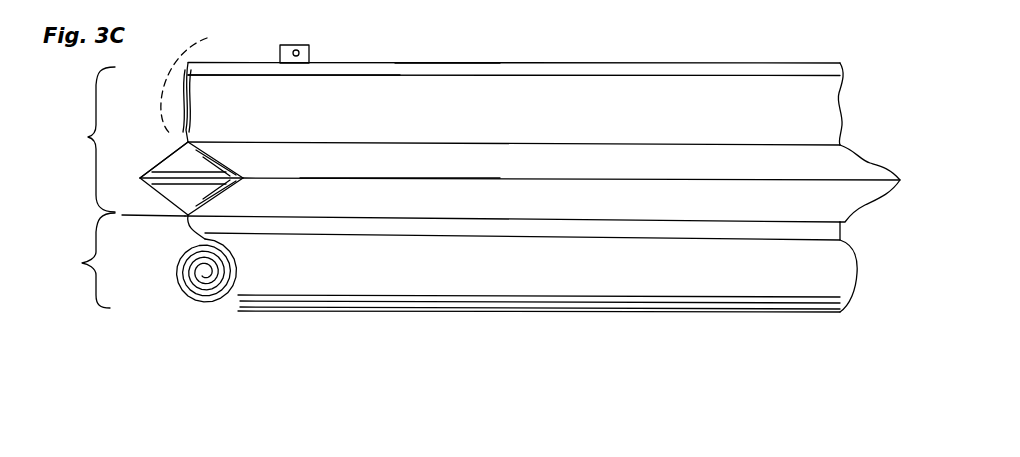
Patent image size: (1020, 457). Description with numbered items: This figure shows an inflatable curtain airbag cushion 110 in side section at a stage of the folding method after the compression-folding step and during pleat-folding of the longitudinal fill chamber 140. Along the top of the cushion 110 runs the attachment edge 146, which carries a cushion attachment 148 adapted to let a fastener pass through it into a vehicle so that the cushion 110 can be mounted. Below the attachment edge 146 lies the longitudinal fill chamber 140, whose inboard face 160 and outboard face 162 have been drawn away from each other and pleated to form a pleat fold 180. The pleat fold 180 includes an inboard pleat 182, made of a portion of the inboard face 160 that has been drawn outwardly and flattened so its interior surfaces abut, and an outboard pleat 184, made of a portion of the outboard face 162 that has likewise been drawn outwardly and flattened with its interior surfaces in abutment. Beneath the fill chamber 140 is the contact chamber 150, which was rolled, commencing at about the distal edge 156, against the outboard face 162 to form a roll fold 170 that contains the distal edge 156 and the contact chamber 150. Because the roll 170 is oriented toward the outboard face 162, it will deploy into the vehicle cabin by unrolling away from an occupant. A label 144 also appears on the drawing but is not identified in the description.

The inflatable curtain 110 is at (633, 54).
The longitudinal fill chamber 140 is at (79, 139).
The inner layer 144 is at (245, 105).
The attachment edge 146 is at (403, 70).
The cushion attachment 148 is at (309, 53).
The contact chamber 150 is at (446, 262).
The distal edge 156 is at (205, 275).
The inboard face 160 is at (741, 122).
The outboard face 162 is at (216, 74).
The roll fold 170 is at (490, 283).
The pleat fold 180 is at (125, 178).
The inboard pleat 182 is at (333, 177).
The outboard pleat 184 is at (140, 177).